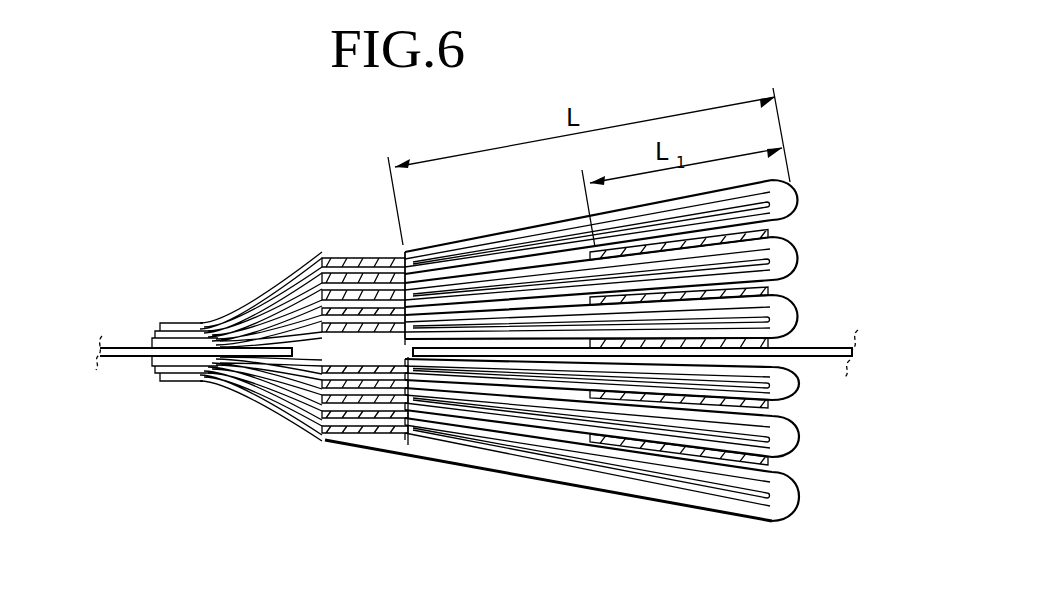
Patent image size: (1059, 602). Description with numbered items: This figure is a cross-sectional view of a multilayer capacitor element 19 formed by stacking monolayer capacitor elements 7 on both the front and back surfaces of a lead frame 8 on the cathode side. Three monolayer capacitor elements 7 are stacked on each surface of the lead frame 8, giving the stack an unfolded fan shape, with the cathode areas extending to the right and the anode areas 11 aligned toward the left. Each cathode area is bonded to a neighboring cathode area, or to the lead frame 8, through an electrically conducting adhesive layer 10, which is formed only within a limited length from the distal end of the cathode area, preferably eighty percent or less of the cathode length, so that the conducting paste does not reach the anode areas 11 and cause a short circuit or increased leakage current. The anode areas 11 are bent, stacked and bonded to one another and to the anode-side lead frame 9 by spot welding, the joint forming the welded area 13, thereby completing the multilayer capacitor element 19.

The monolayer capacitor element 7 is at (805, 199).
The lead frame 8 is at (850, 356).
The lead frame 9 is at (124, 358).
The electrically conducting adhesive layer 10 is at (706, 400).
The anode area 11 is at (182, 328).
The welded area 13 is at (183, 384).
The multilayer capacitor element 19 is at (450, 470).